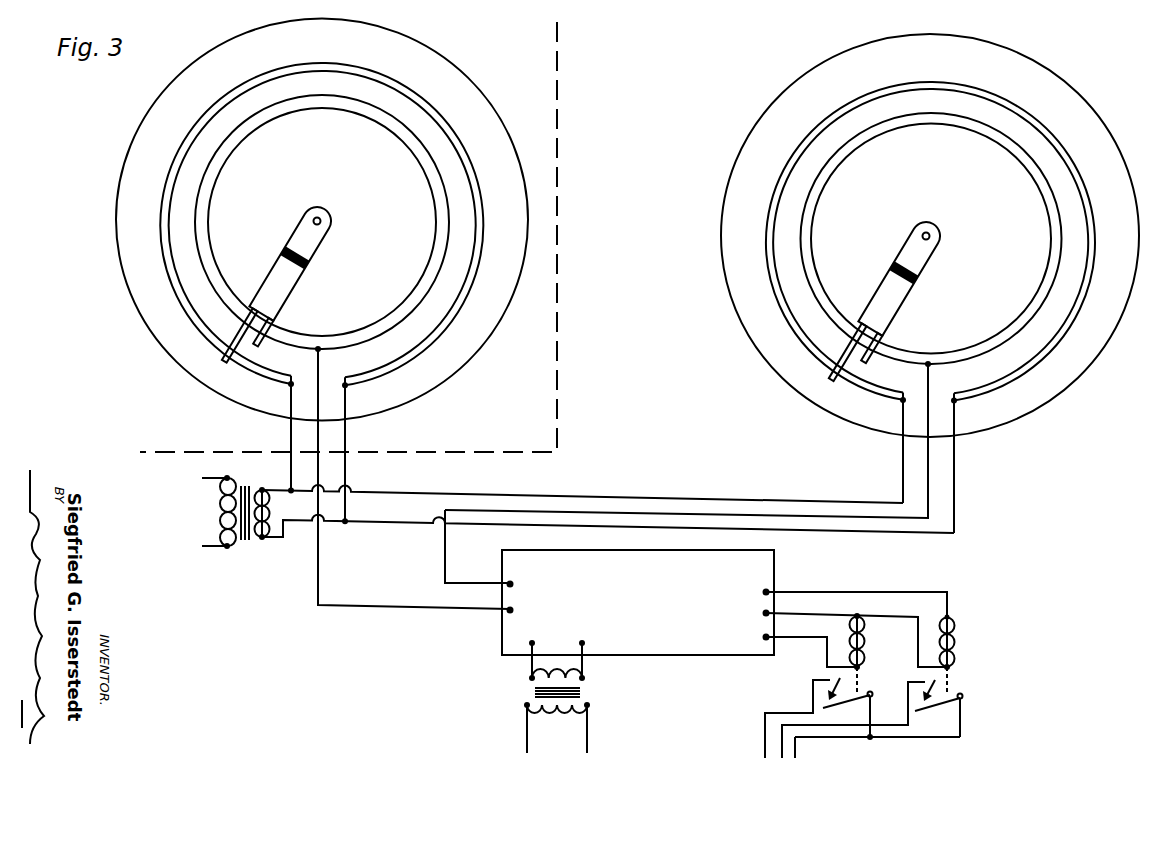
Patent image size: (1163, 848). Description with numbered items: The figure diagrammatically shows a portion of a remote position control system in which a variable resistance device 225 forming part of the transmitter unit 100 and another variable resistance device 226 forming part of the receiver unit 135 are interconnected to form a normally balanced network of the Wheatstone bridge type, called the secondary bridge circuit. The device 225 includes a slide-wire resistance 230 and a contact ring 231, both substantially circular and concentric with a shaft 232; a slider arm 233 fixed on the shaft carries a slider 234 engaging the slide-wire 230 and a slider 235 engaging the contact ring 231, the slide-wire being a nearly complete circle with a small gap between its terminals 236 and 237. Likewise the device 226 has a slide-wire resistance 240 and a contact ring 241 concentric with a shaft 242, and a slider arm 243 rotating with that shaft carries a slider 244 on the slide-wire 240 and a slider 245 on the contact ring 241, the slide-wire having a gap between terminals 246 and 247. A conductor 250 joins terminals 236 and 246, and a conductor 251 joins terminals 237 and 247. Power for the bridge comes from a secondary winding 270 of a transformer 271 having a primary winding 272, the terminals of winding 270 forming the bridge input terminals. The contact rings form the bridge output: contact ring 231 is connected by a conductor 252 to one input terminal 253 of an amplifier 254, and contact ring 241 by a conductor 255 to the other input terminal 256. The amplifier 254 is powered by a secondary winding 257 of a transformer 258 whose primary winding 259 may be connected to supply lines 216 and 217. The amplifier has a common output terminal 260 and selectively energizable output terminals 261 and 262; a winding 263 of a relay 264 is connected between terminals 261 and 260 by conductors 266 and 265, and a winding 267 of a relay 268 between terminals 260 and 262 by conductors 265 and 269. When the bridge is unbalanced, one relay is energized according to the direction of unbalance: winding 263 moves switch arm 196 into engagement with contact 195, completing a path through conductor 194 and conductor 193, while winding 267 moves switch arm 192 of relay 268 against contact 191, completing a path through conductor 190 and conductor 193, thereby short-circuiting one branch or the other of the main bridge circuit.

The transmitter unit 100 is at (497, 49).
The receiver unit 135 is at (605, 53).
The variable resistance device 225 is at (117, 207).
The variable resistance device 226 is at (1076, 367).
The slide-wire resistance 230 is at (188, 307).
The contact ring 231 is at (211, 274).
The shaft 232 is at (321, 219).
The slider arm 233 is at (312, 273).
The slider 234 is at (226, 358).
The slider 235 is at (259, 346).
The terminal 236 is at (289, 386).
The terminal 237 is at (346, 386).
The slide-wire resistance 240 is at (789, 319).
The contact ring 241 is at (813, 266).
The shaft 242 is at (933, 233).
The slider arm 243 is at (919, 287).
The slider 244 is at (833, 376).
The slider 245 is at (867, 358).
The terminal 246 is at (900, 401).
The terminal 247 is at (955, 401).
The conductor 250 is at (590, 496).
The conductor 251 is at (600, 522).
The conductor 252 is at (407, 606).
The input terminal 253 is at (513, 610).
The amplifier 254 is at (612, 609).
The conductor 255 is at (446, 569).
The input terminal 256 is at (513, 584).
The secondary winding 257 is at (572, 678).
The transformer 258 is at (584, 690).
The primary winding 259 is at (548, 716).
The common output terminal 260 is at (764, 613).
The output terminal 261 is at (764, 591).
The output terminal 262 is at (764, 637).
The winding 263 is at (956, 640).
The relay 264 is at (982, 662).
The conductor 265 is at (830, 616).
The conductor 266 is at (858, 592).
The winding 267 is at (866, 631).
The relay 268 is at (872, 657).
The conductor 269 is at (793, 637).
The secondary winding 270 is at (268, 510).
The transformer 271 is at (242, 548).
The primary winding 272 is at (219, 512).
The conductor 190 is at (765, 739).
The contact 191 is at (844, 684).
The switch arm 192 is at (854, 707).
The conductor 193 is at (808, 738).
The conductor 194 is at (784, 759).
The contact 195 is at (938, 685).
The switch arm 196 is at (944, 710).
The supply line 216 is at (525, 741).
The supply line 217 is at (590, 741).